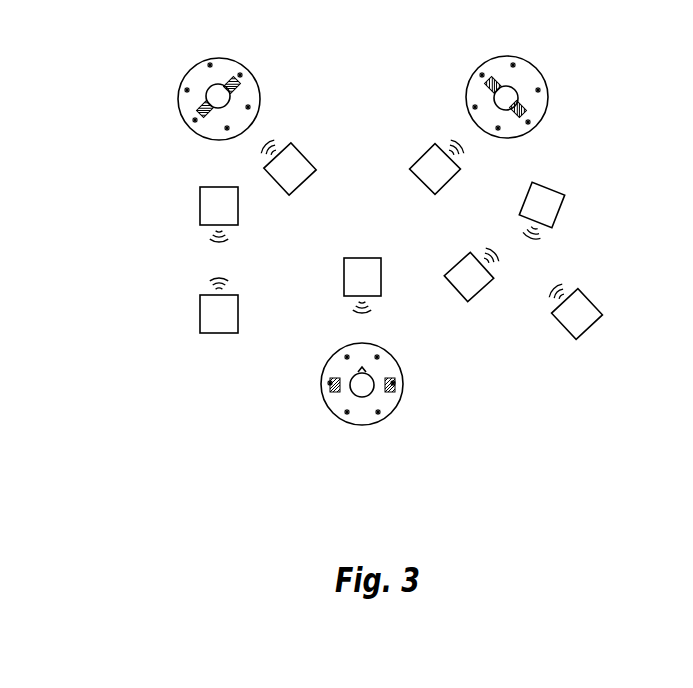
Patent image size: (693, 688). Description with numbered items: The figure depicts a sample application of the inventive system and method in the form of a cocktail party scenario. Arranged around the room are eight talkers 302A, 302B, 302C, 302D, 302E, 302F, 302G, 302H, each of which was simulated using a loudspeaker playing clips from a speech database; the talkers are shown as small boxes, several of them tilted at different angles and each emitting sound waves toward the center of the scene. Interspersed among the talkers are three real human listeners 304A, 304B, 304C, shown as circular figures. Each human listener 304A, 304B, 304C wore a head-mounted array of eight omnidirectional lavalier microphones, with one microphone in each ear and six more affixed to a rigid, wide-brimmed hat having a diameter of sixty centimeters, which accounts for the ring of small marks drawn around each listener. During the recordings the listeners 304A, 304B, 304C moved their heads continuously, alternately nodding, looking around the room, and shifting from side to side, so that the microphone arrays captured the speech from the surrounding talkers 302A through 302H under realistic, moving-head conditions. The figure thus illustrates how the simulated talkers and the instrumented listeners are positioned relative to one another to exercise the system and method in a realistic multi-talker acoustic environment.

The talker 302A is at (183, 210).
The talker 302B is at (195, 315).
The talker 302C is at (312, 145).
The talker 302D is at (360, 252).
The talker 302E is at (468, 172).
The talker 302F is at (448, 302).
The talker 302G is at (567, 210).
The talker 302H is at (597, 298).
The human listener 304A is at (260, 63).
The human listener 304B is at (560, 80).
The human listener 304C is at (408, 410).